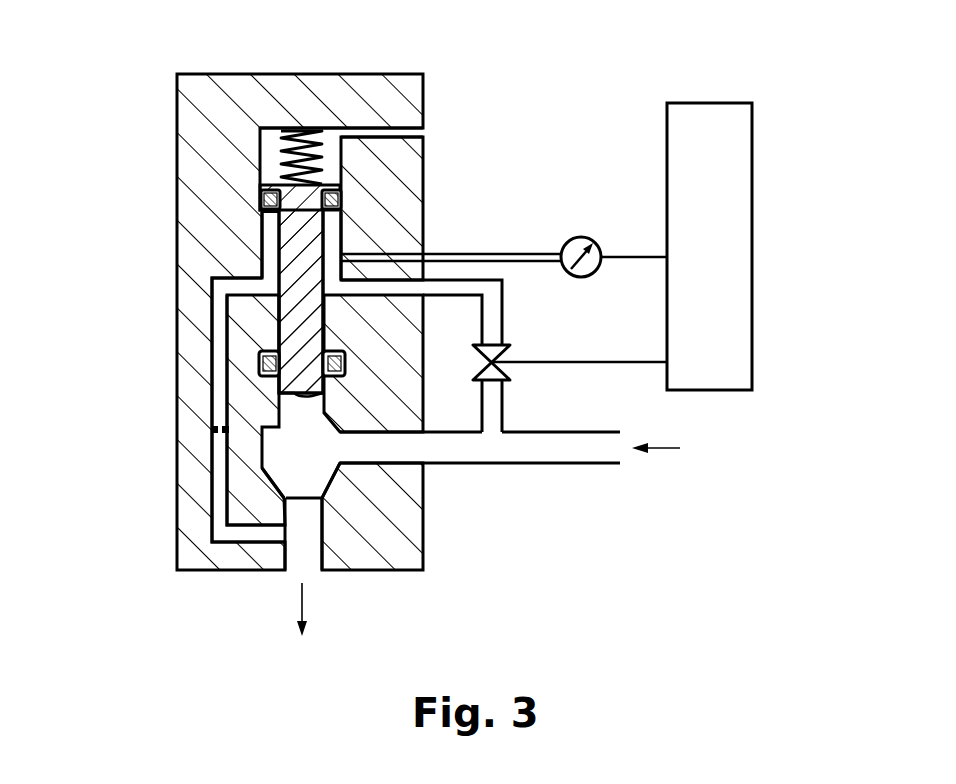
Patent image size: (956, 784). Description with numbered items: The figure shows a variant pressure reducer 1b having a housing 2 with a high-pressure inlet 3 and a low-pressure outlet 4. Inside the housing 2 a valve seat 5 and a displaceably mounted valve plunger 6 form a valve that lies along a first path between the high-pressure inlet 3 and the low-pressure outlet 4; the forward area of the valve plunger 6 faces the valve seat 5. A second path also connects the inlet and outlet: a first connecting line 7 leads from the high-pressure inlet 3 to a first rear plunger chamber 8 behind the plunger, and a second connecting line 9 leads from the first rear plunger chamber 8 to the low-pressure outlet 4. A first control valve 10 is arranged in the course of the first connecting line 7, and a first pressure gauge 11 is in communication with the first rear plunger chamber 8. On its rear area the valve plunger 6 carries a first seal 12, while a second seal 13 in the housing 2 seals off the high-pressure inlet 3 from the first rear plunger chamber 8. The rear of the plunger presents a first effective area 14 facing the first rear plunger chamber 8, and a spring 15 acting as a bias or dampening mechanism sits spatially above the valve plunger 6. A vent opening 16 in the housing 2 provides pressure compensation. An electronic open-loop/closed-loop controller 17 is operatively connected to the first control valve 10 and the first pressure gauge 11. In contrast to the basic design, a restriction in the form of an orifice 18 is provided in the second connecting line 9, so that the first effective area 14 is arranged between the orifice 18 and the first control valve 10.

The pressure reducer 1b is at (132, 39).
The housing 2 is at (178, 103).
The high-pressure inlet 3 is at (622, 458).
The low-pressure outlet 4 is at (307, 575).
The valve seat 5 is at (330, 488).
The valve plunger 6 is at (287, 345).
The first connecting line 7 is at (493, 417).
The first rear plunger chamber 8 is at (270, 260).
The second connecting line 9 is at (218, 502).
The first control valve 10 is at (492, 352).
The first pressure gauge 11 is at (587, 237).
The first seal 12 is at (262, 196).
The second seal 13 is at (260, 365).
The first effective area 14 is at (262, 215).
The spring 15 is at (295, 127).
The vent opening 16 is at (422, 133).
The electronic open-loop/closed-loop controller 17 is at (742, 125).
The orifice 18 is at (217, 432).